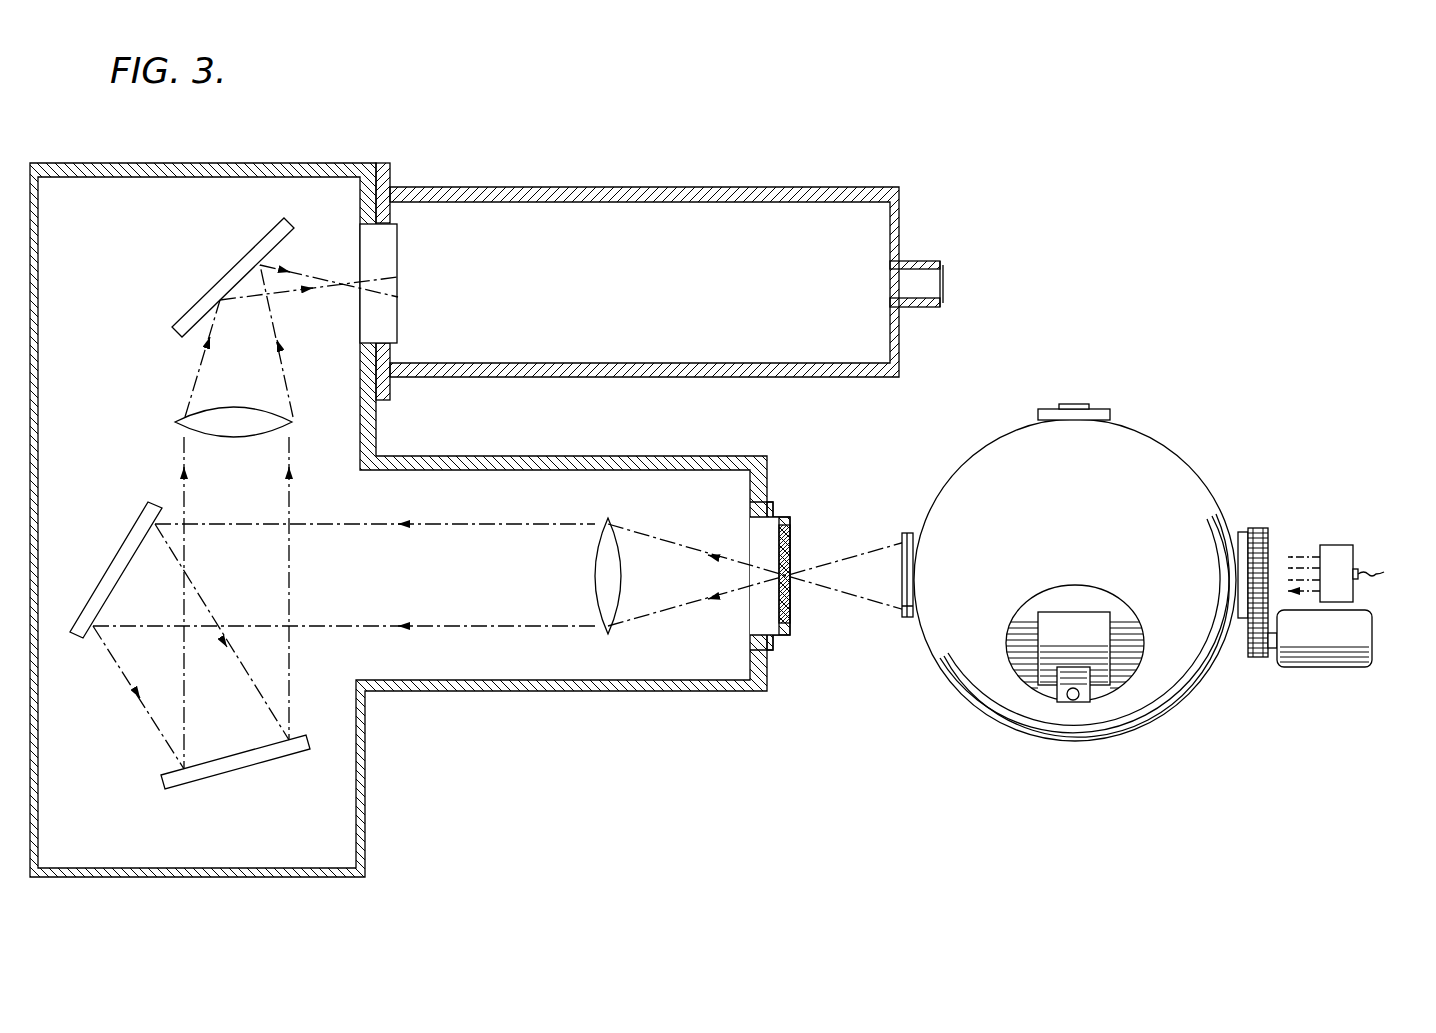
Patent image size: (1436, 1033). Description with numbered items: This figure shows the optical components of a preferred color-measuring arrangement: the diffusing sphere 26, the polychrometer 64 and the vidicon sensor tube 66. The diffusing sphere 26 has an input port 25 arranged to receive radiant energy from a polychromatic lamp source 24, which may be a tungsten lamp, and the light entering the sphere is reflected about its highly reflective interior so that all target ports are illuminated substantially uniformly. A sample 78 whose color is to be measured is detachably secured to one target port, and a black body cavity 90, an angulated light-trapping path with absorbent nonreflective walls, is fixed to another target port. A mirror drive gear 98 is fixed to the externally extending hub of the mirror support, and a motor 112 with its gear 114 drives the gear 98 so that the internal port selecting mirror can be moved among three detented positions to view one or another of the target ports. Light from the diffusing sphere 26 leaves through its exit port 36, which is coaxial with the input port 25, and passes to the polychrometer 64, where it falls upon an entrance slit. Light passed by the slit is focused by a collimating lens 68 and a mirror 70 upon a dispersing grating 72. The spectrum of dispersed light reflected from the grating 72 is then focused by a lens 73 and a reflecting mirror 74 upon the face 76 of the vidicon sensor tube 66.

The polychrometer 64 is at (133, 158).
The vidicon sensor tube 66 is at (697, 187).
The face of the vidicon sensor tube 76 is at (398, 250).
The reflecting mirror 74 is at (218, 288).
The lens 73 is at (275, 422).
The mirror 70 is at (122, 548).
The dispersing grating 72 is at (228, 770).
The collimating lens 68 is at (612, 525).
The diffusing sphere 26 is at (1194, 424).
The sample 78 is at (1082, 404).
The exit port 36 is at (903, 540).
The black body cavity 90 is at (1053, 648).
The input port 25 is at (1240, 572).
The mirror drive gear 98 is at (1268, 541).
The gear 114 is at (1256, 658).
The motor 112 is at (1305, 665).
The polychromatic lamp source 24 is at (1346, 550).